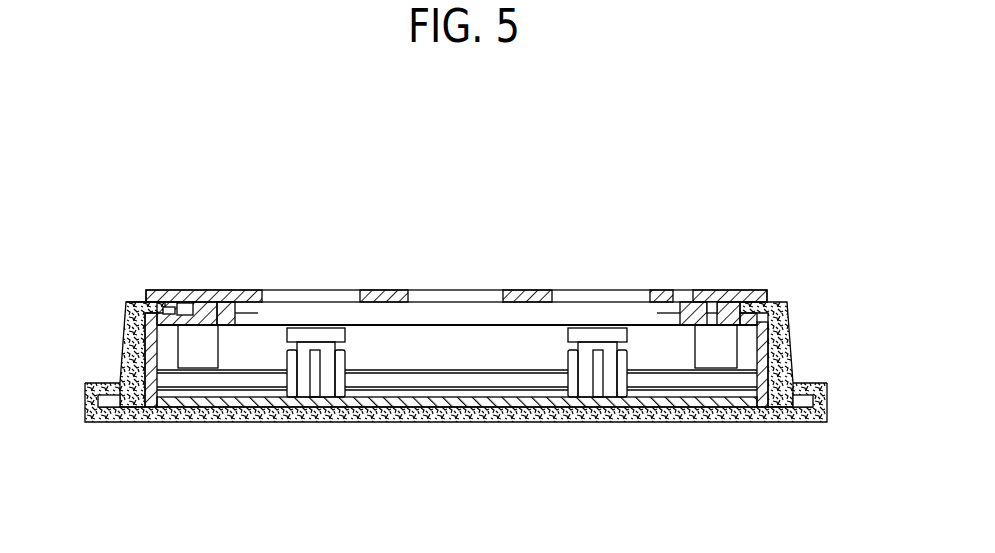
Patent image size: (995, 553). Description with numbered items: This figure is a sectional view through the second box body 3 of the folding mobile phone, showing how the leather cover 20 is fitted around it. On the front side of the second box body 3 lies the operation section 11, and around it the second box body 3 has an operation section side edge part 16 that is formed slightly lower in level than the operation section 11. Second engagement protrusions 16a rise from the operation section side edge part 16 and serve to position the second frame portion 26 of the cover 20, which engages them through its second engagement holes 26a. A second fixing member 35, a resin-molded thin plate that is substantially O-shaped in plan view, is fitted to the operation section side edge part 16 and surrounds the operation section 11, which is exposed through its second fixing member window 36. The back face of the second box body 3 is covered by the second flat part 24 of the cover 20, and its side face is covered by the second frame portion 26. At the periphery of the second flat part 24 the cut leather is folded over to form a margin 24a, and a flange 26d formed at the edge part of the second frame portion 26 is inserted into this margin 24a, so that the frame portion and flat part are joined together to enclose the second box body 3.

The cover 20 is at (461, 359).
The second flat part 24 is at (461, 425).
The margin 24a is at (110, 383).
The second frame portion 26 is at (443, 356).
The second engagement hole 26a is at (163, 300).
The flange 26d is at (112, 407).
The second box body 3 is at (768, 342).
The operation section 11 is at (382, 290).
The operation section side edge part 16 is at (188, 247).
The second engagement protrusion 16a is at (170, 292).
The second fixing member 35 is at (182, 292).
The second fixing member window 36 is at (678, 290).